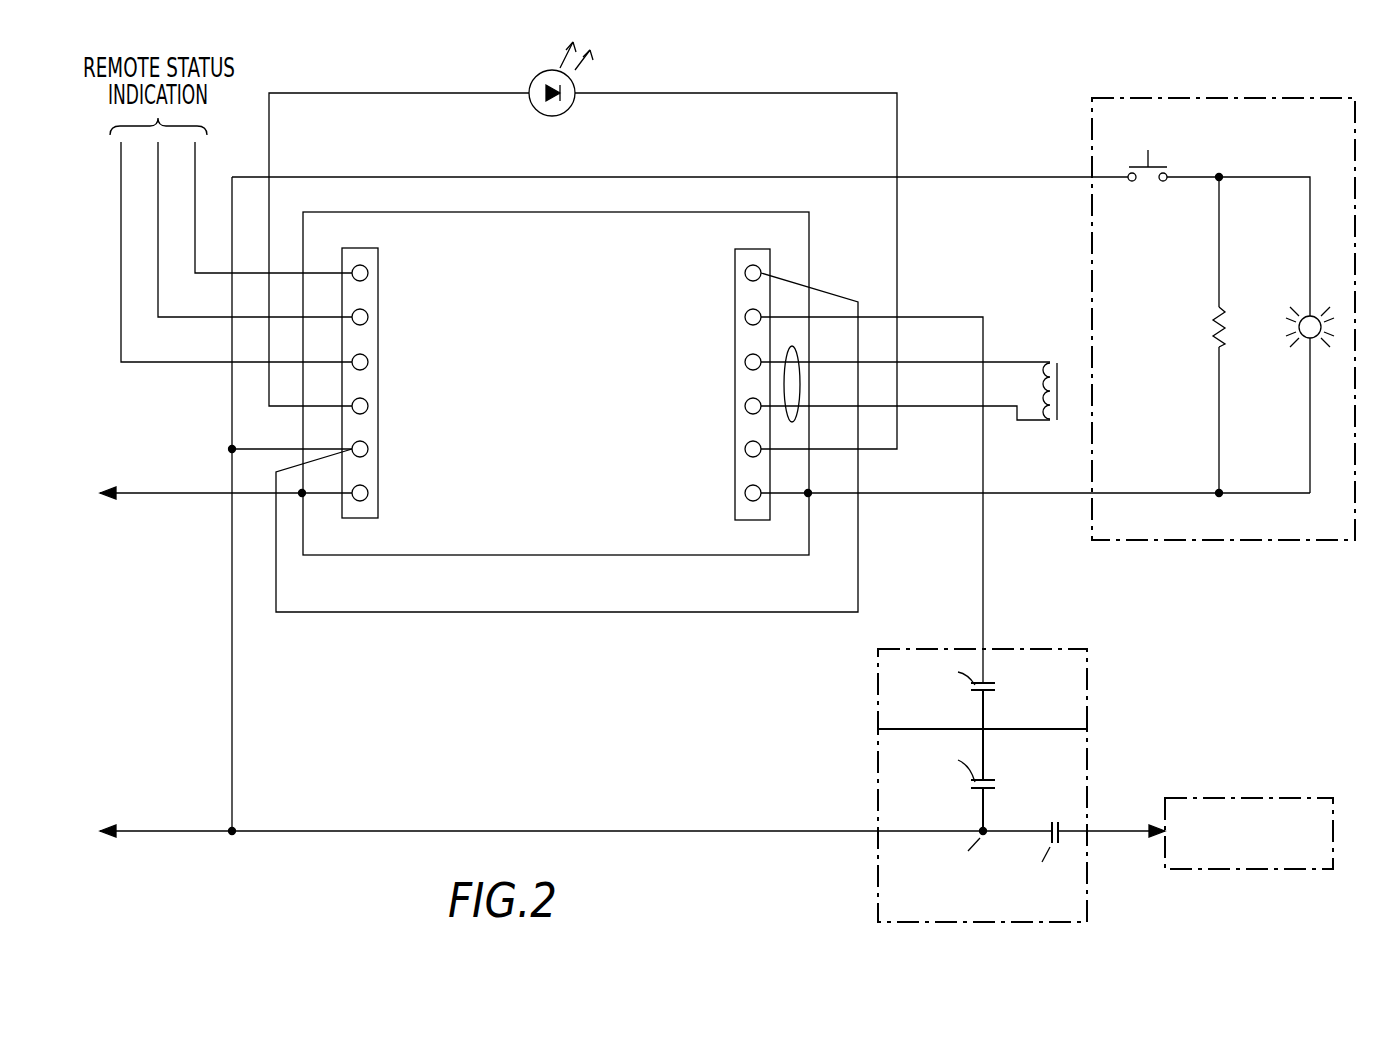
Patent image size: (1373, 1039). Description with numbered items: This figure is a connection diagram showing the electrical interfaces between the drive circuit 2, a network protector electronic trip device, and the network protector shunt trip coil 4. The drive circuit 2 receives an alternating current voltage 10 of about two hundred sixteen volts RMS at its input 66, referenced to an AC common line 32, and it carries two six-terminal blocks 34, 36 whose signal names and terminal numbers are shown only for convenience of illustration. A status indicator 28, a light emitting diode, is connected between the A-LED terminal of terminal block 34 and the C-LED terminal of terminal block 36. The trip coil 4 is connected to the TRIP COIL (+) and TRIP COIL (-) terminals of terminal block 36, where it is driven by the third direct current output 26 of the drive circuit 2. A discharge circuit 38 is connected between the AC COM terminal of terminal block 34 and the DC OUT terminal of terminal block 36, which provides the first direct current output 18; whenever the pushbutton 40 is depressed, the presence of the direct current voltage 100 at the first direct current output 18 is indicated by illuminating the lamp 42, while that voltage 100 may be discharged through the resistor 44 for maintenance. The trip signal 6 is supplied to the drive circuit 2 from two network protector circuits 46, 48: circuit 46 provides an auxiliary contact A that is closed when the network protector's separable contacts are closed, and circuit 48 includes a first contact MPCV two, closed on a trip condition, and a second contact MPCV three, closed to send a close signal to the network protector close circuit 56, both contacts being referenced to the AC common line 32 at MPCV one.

The drive circuit 2 is at (597, 557).
The network protector shunt trip coil 4 is at (1050, 362).
The trip signal 6 is at (930, 317).
The alternating current voltage 10 is at (150, 495).
The first direct current output 18 is at (808, 494).
The third direct current output 26 is at (792, 346).
The status indicator 28 is at (561, 115).
The AC common line 32 is at (153, 833).
The terminal block 34 is at (378, 514).
The terminal block 36 is at (735, 520).
The discharge circuit 38 is at (1270, 541).
The pushbutton 40 is at (1150, 157).
The lamp 42 is at (1302, 345).
The resistor 44 is at (1224, 312).
The network protector circuit 46 is at (1087, 672).
The network protector circuit 48 is at (1087, 778).
The network protector close circuit 56 is at (1235, 798).
The input 66 is at (300, 495).
The direct current voltage 100 is at (885, 492).